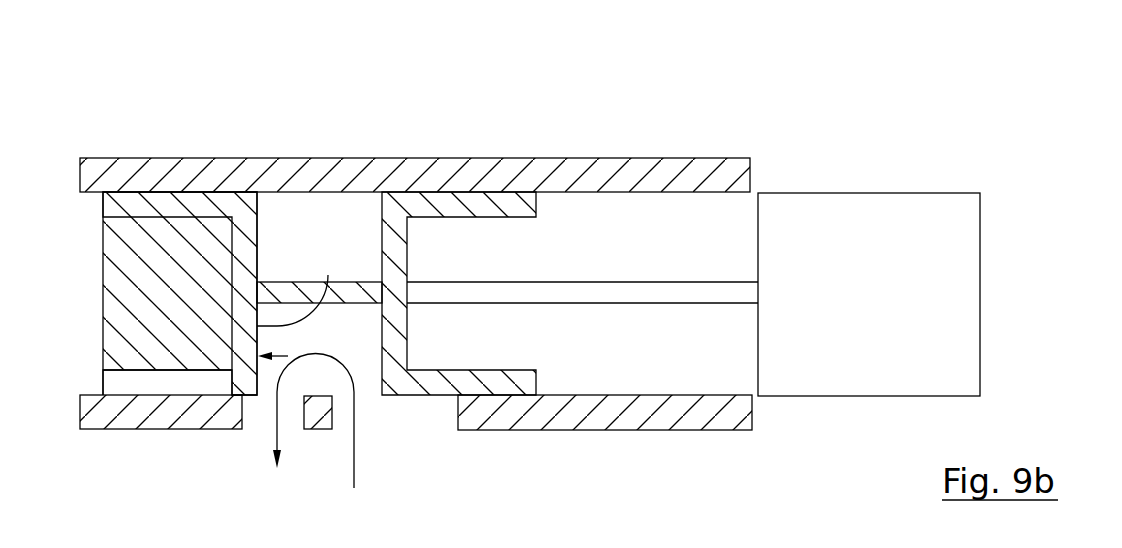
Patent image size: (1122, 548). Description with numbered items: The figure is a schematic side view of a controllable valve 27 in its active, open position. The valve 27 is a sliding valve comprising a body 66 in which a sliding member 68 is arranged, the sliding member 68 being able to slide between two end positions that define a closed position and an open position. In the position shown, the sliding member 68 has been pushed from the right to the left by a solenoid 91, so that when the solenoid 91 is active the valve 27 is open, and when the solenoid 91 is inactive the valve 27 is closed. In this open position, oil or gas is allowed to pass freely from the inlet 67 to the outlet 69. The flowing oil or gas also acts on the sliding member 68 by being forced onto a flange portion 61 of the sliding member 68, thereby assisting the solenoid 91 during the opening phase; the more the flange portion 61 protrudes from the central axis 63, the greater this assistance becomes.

The valve 27 is at (600, 112).
The flange portion 61 is at (325, 286).
The central axis 63 is at (287, 285).
The body 66 is at (178, 173).
The inlet 67 is at (405, 415).
The sliding member 68 is at (236, 258).
The outlet 69 is at (257, 419).
The solenoid 91 is at (873, 213).